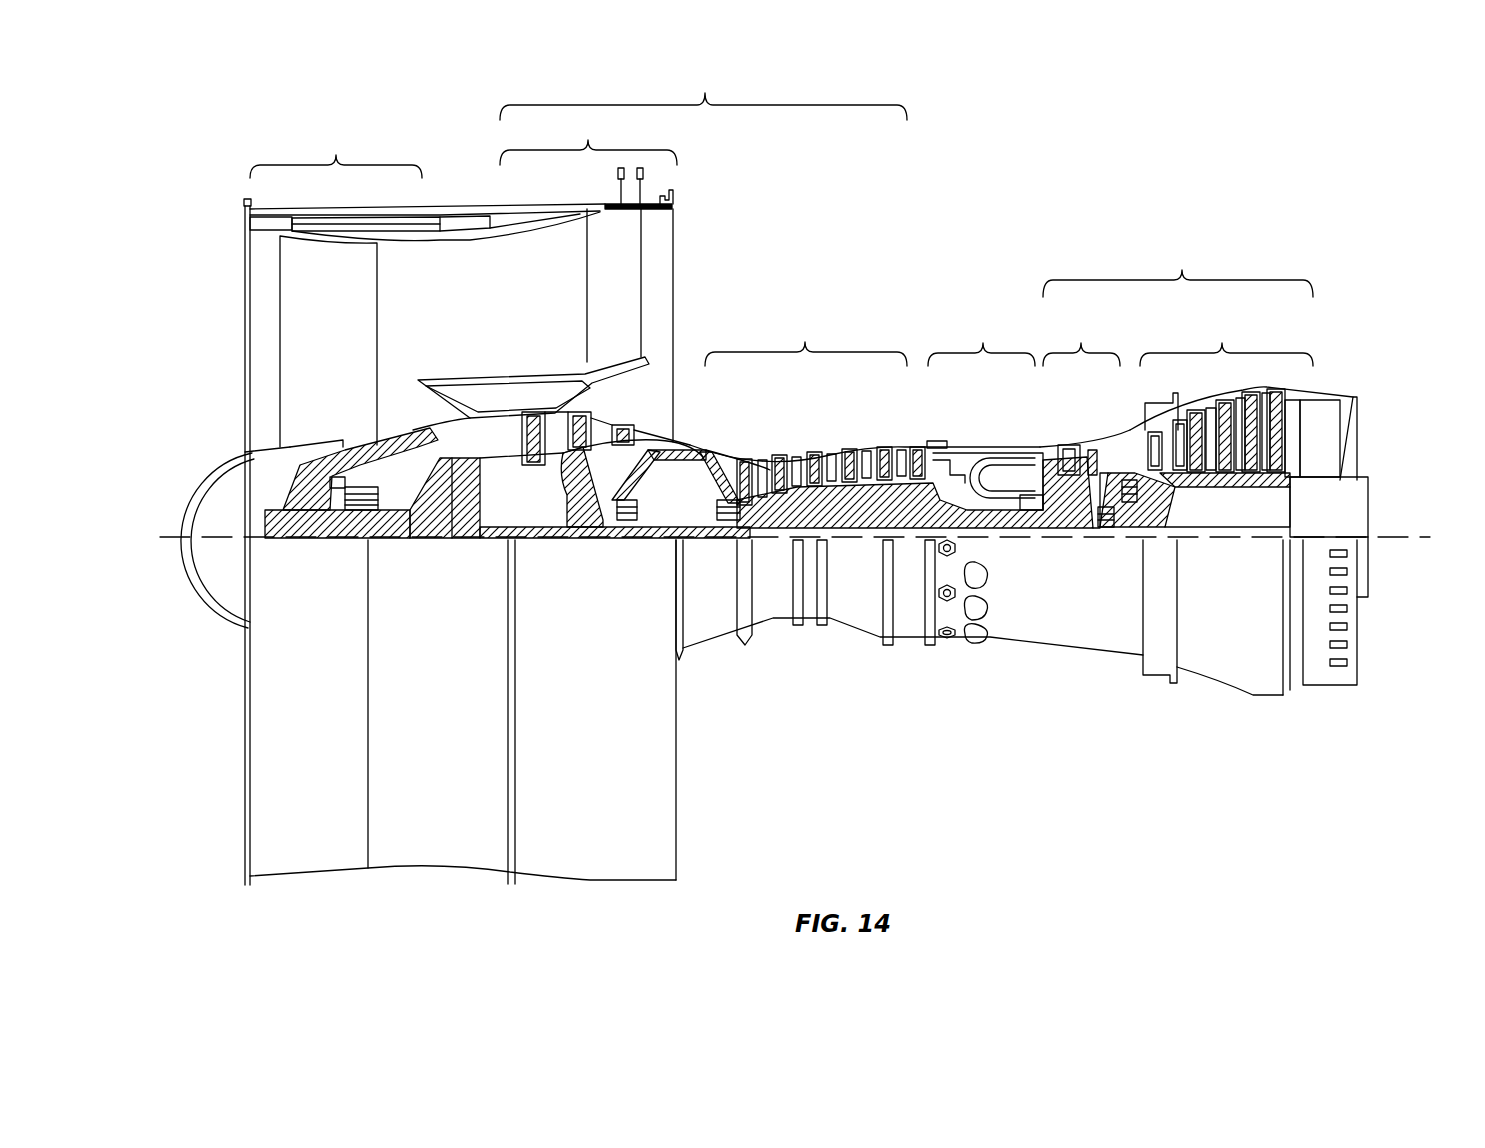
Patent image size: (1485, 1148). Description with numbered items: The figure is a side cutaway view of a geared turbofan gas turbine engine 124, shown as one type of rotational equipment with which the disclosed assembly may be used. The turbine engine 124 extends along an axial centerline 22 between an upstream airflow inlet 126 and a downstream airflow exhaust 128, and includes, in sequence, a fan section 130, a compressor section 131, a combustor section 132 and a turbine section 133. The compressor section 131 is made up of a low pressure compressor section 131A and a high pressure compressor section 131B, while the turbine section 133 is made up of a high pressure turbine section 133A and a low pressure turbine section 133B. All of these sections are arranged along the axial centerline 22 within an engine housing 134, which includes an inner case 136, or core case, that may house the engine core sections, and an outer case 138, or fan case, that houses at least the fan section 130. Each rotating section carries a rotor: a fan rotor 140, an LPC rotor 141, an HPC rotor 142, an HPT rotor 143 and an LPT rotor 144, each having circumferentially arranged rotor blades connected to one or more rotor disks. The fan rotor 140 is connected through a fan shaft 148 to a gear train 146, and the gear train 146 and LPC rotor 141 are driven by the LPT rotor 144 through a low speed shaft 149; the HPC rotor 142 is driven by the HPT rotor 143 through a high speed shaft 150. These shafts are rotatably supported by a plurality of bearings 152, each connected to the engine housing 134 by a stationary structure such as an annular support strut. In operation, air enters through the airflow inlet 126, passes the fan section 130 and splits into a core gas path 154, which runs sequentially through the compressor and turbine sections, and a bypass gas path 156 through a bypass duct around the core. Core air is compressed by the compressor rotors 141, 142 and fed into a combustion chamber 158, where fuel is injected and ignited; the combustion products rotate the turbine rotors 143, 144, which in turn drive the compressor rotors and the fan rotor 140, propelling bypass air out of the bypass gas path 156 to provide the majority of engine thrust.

The axial centerline 22 is at (1412, 548).
The geared turbofan gas turbine engine 124 is at (214, 186).
The upstream airflow inlet 126 is at (245, 288).
The downstream airflow exhaust 128 is at (1358, 432).
The fan section 130 is at (336, 152).
The compressor section 131 is at (703, 91).
The low pressure compressor section 131A is at (551, 288).
The high pressure compressor section 131B is at (865, 409).
The combustor section 132 is at (985, 413).
The turbine section 133 is at (1178, 268).
The high pressure turbine section 133A is at (1085, 395).
The low pressure turbine section 133B is at (1241, 396).
The engine housing 134 is at (705, 665).
The inner case 136 is at (905, 640).
The outer case 138 is at (625, 880).
The fan rotor 140 is at (250, 452).
The LPC rotor 141 is at (572, 475).
The HPC rotor 142 is at (850, 500).
The HPT rotor 143 is at (1070, 520).
The LPT rotor 144 is at (1222, 482).
The gear train 146 is at (460, 540).
The fan shaft 148 is at (315, 540).
The low speed shaft 149 is at (1237, 540).
The high speed shaft 150 is at (1000, 525).
The bearing 152 is at (378, 510).
The core gas path 154 is at (702, 456).
The bypass gas path 156 is at (515, 313).
The combustion chamber 158 is at (990, 468).